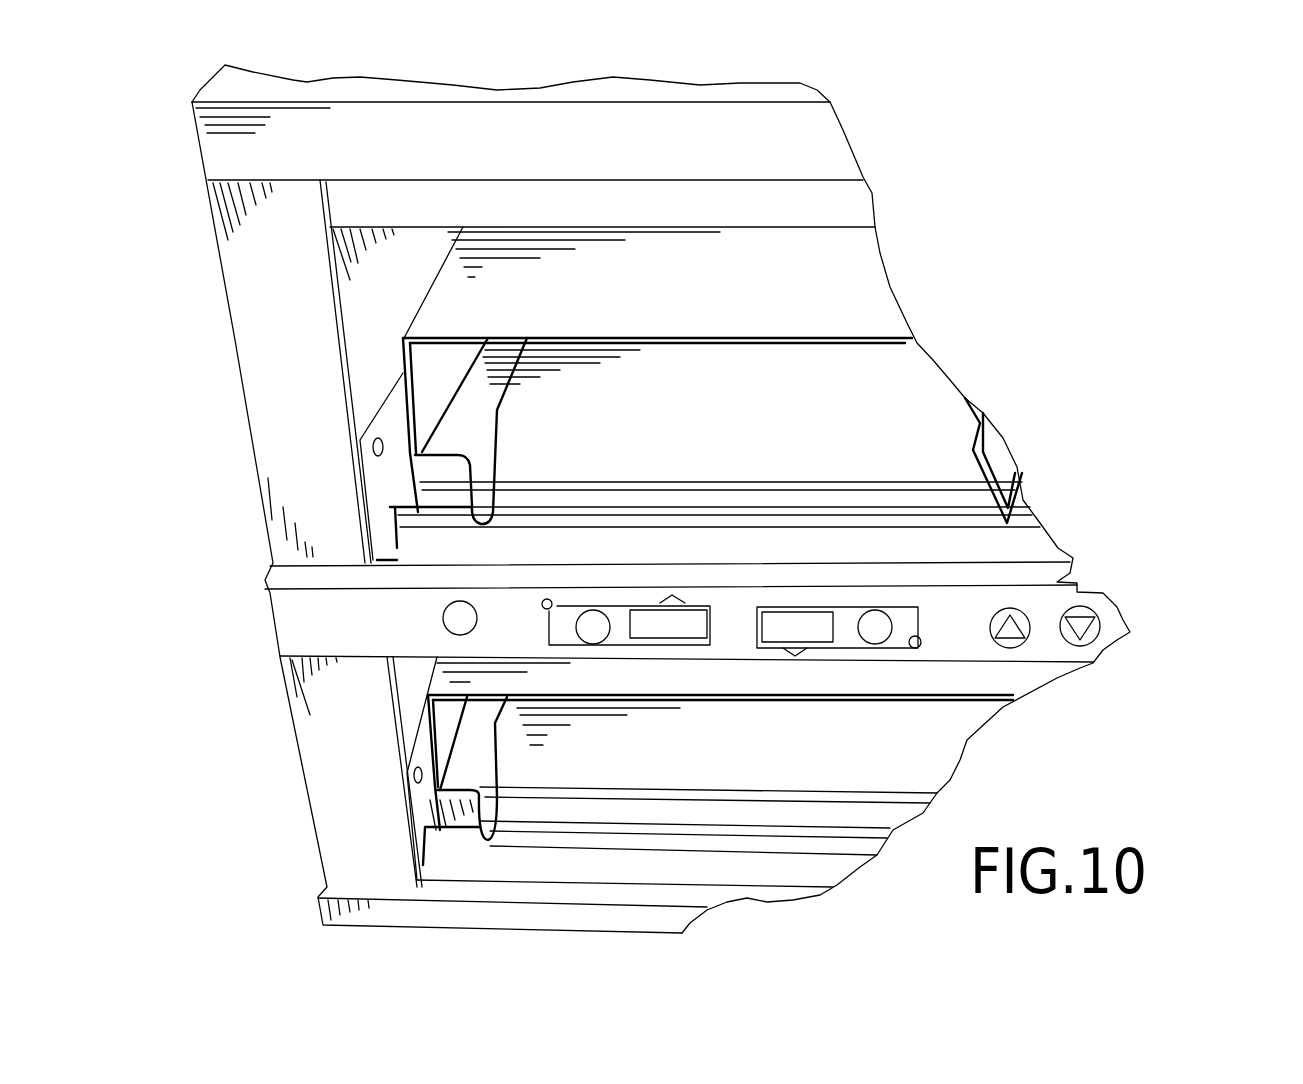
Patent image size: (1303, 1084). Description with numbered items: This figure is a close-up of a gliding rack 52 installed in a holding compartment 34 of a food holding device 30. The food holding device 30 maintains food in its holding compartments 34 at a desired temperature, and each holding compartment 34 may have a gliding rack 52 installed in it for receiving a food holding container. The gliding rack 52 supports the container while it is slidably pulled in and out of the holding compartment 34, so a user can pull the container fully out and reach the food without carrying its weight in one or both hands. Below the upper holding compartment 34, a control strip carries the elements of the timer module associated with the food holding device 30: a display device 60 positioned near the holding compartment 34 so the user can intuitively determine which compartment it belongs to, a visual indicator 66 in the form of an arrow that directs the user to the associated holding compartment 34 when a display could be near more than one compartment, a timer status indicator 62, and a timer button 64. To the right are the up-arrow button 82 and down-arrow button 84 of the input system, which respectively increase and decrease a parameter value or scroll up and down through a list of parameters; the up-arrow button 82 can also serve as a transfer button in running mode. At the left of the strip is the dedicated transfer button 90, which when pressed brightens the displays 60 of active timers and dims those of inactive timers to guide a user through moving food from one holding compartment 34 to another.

The food holding device 30 is at (238, 102).
The holding compartment 34 is at (795, 233).
The gliding rack 52 is at (217, 670).
The display device 60 is at (783, 618).
The timer status indicator 62 is at (915, 645).
The timer button 64 is at (880, 625).
The visual indicator 66 is at (797, 653).
The up-arrow button 82 is at (1013, 637).
The down-arrow button 84 is at (1090, 628).
The transfer button 90 is at (457, 623).